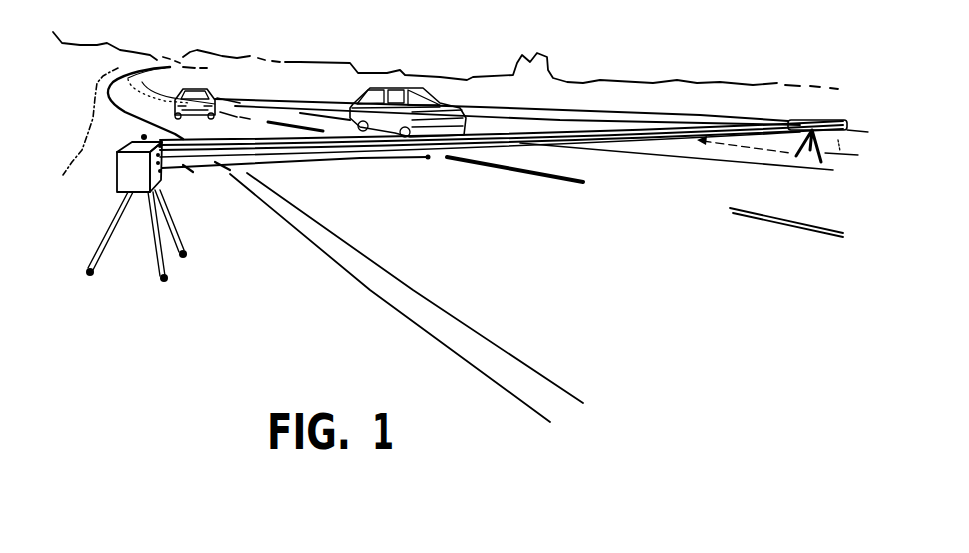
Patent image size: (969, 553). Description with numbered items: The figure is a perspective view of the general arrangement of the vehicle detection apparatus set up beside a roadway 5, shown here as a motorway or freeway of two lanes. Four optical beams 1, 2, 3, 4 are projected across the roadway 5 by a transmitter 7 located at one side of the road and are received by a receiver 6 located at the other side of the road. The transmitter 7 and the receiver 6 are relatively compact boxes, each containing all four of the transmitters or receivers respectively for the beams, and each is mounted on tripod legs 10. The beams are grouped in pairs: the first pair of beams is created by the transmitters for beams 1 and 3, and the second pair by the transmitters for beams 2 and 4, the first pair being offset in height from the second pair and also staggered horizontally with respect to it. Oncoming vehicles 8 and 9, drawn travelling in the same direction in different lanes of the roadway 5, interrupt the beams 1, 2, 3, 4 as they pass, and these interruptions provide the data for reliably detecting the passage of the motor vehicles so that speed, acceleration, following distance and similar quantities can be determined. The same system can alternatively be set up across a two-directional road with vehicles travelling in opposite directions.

The optical beam 1 is at (190, 176).
The optical beam 2 is at (282, 170).
The optical beam 3 is at (275, 143).
The optical beam 4 is at (222, 142).
The roadway 5 is at (583, 249).
The receiver 6 is at (144, 136).
The transmitter 7 is at (828, 118).
The vehicle 8 is at (418, 87).
The vehicle 9 is at (212, 88).
The tripod legs 10 is at (102, 255).